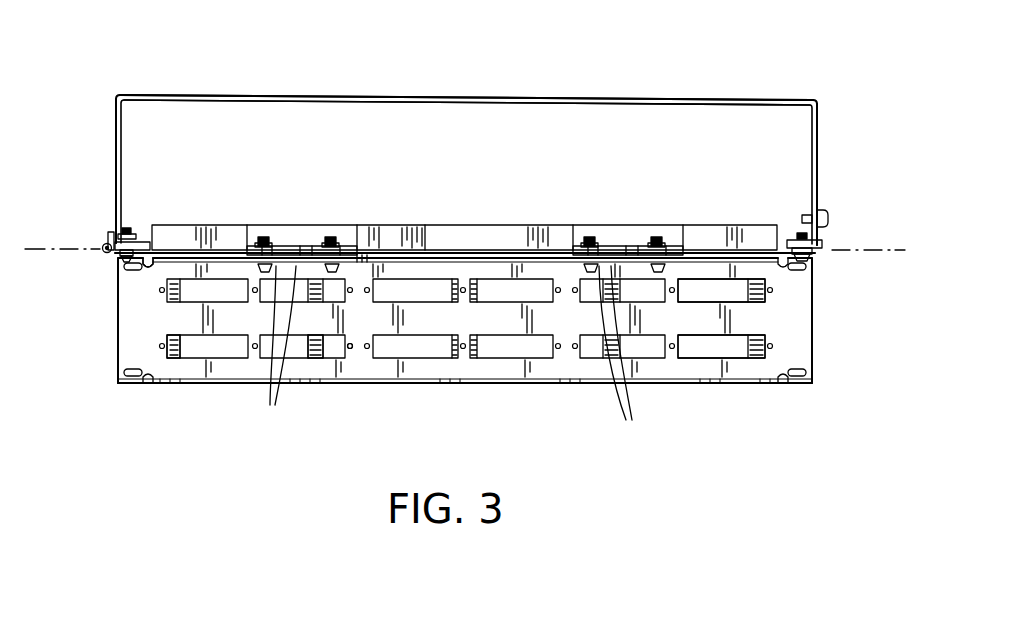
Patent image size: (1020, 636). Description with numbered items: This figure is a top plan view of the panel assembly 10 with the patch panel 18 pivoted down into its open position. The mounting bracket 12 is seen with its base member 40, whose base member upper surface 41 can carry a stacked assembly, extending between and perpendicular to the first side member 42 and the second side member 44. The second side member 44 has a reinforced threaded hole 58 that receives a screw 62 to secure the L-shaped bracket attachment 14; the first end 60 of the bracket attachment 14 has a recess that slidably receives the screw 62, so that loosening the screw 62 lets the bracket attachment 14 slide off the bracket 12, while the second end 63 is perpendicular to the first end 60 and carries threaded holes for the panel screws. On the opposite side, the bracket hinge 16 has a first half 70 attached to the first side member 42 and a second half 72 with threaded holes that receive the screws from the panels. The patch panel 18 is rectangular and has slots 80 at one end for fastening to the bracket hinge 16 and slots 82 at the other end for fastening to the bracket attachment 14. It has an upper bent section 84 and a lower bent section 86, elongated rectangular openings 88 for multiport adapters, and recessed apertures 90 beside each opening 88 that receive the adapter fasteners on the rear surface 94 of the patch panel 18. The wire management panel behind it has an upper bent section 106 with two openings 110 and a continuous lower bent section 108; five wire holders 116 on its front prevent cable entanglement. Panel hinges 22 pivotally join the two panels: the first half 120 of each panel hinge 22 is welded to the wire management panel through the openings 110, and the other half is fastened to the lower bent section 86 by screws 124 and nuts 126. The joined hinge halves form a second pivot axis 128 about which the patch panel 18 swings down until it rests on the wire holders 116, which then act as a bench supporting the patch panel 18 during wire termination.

The panel assembly 10 is at (200, 78).
The mounting bracket 12 is at (372, 99).
The bracket attachment 14 is at (823, 249).
The bracket hinge 16 is at (102, 255).
The patch panel 18 is at (568, 363).
The panel hinge 22 is at (344, 241).
The base member 40 is at (627, 97).
The base member upper surface 41 is at (258, 98).
The first side member 42 is at (115, 115).
The second side member 44 is at (826, 118).
The reinforced threaded hole 58 is at (810, 214).
The first end of bracket attachment 60 is at (825, 236).
The screw 62 is at (829, 214).
The second end of bracket attachment 63 is at (800, 232).
The first half of bracket hinge 70 is at (109, 238).
The second half of bracket hinge 72 is at (131, 241).
The slots 80 is at (127, 262).
The slots 82 is at (800, 274).
The upper bent section 84 is at (467, 383).
The lower bent section 86 is at (160, 268).
The rectangular openings 88 is at (408, 358).
The recessed apertures 90 is at (351, 350).
The rear surface of patch panel 94 is at (677, 320).
The upper bent section 106 is at (485, 232).
The lower bent section 108 is at (272, 232).
The openings 110 is at (249, 243).
The wire holders 116 is at (187, 356).
The first half of panel hinge 120 is at (358, 257).
The screws 124 is at (454, 357).
The nuts 126 is at (310, 245).
The second pivot axis 128 is at (859, 252).